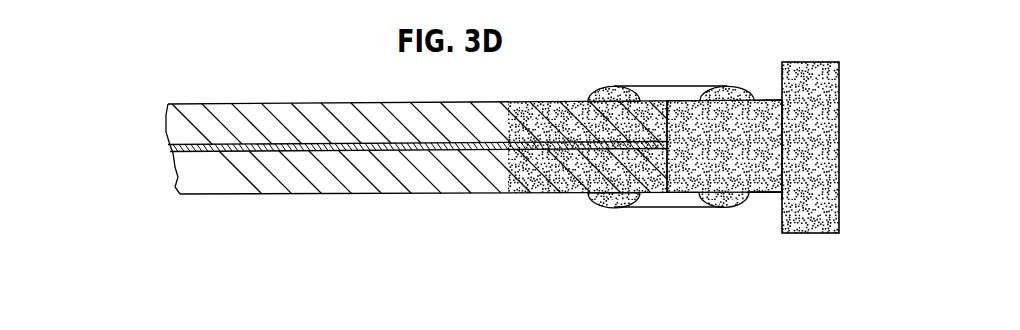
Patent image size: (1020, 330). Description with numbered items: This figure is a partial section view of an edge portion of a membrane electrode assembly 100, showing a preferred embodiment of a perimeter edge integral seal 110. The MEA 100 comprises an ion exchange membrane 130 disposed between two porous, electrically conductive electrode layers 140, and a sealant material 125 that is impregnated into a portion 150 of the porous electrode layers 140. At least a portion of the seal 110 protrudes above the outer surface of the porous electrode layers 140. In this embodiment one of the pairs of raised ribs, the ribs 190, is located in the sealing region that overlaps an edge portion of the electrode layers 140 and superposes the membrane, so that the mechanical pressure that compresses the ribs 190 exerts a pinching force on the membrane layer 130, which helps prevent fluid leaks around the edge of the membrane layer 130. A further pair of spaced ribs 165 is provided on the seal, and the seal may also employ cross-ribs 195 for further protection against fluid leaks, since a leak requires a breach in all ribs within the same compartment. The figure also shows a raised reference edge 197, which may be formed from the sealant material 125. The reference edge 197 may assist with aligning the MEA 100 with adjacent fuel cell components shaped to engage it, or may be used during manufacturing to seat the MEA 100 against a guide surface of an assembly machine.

The membrane electrode assembly 100 is at (216, 76).
The integral seal 110 is at (866, 154).
The sealant material 125 is at (817, 125).
The ion exchange membrane 130 is at (168, 147).
The porous electrically conductive electrode layer 140 is at (297, 132).
The impregnated portion of the porous electrode layers 150 is at (565, 125).
The rib 165 is at (730, 87).
The rib 190 is at (613, 95).
The cross-rib 195 is at (687, 205).
The raised reference edge 197 is at (779, 208).